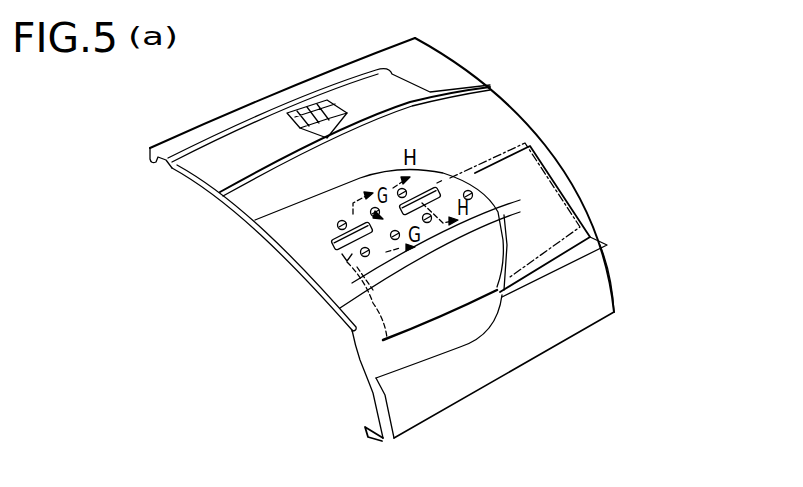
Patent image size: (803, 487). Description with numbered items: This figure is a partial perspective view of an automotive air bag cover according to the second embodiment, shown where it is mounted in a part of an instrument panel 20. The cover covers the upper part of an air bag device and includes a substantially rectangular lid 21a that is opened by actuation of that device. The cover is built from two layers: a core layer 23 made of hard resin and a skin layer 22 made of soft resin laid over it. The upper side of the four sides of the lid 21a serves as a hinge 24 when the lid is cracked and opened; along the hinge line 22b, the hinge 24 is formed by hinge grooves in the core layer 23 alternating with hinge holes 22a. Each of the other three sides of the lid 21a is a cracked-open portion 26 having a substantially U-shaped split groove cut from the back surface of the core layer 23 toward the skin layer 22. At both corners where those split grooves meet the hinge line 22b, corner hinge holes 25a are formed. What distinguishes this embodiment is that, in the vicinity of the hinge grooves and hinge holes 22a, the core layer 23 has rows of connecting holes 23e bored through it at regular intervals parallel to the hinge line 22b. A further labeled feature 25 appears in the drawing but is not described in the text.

The instrument panel 20 is at (510, 90).
The lid 21a is at (590, 210).
The skin layer 22 is at (395, 421).
The hinge holes 22a is at (427, 163).
The hinge line 22b is at (281, 248).
The core layer 23 is at (373, 408).
The connecting holes 23e is at (550, 147).
The hinge 24 is at (450, 167).
The slots 25 is at (329, 250).
The corner hinge holes 25a is at (345, 263).
The cracked-open portion 26 is at (383, 355).